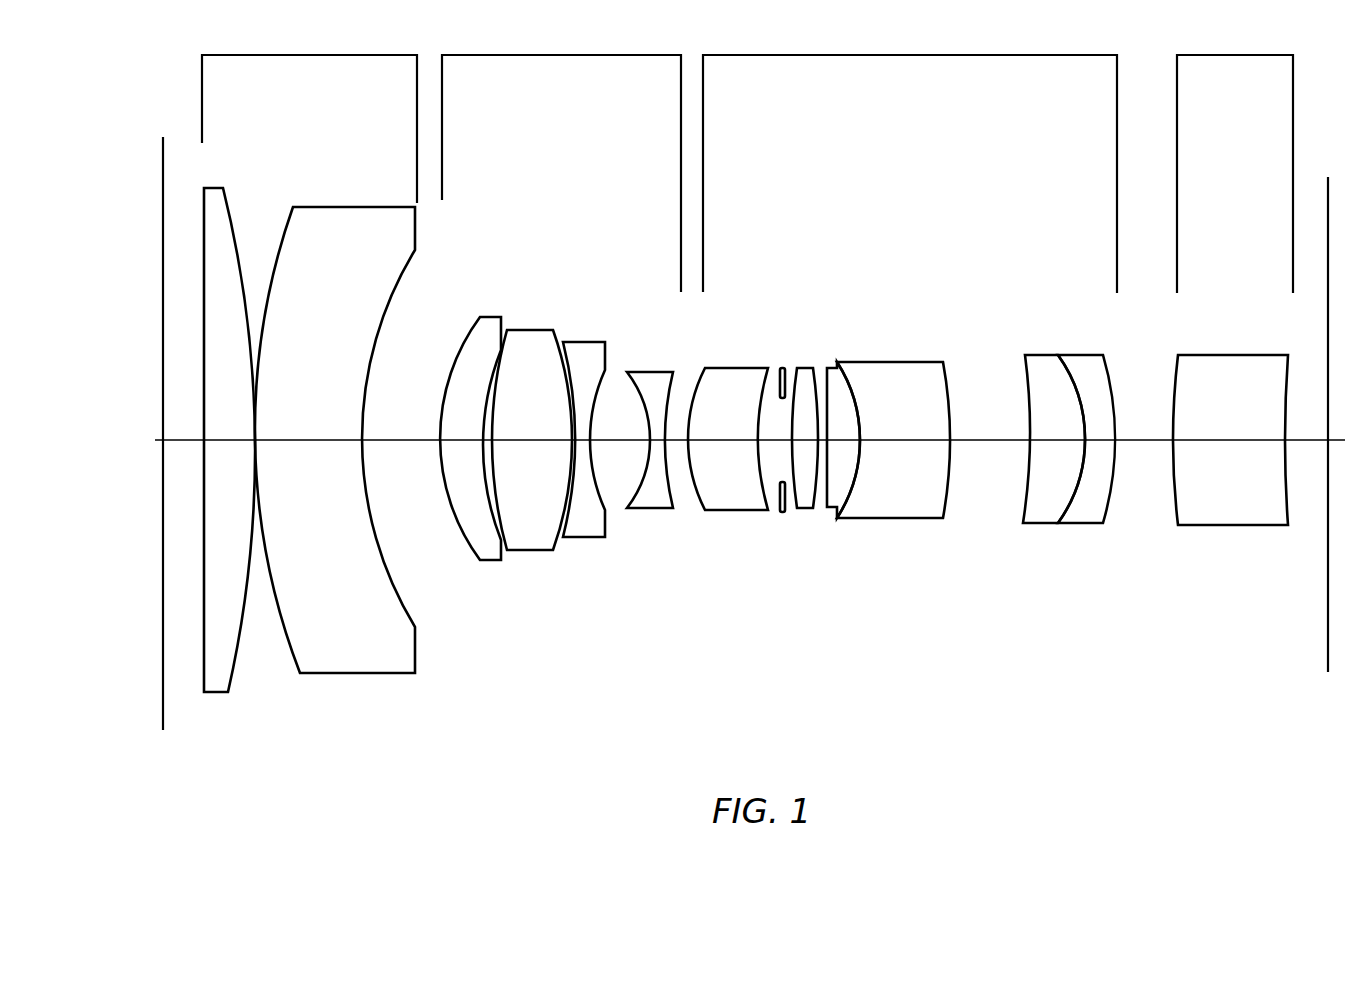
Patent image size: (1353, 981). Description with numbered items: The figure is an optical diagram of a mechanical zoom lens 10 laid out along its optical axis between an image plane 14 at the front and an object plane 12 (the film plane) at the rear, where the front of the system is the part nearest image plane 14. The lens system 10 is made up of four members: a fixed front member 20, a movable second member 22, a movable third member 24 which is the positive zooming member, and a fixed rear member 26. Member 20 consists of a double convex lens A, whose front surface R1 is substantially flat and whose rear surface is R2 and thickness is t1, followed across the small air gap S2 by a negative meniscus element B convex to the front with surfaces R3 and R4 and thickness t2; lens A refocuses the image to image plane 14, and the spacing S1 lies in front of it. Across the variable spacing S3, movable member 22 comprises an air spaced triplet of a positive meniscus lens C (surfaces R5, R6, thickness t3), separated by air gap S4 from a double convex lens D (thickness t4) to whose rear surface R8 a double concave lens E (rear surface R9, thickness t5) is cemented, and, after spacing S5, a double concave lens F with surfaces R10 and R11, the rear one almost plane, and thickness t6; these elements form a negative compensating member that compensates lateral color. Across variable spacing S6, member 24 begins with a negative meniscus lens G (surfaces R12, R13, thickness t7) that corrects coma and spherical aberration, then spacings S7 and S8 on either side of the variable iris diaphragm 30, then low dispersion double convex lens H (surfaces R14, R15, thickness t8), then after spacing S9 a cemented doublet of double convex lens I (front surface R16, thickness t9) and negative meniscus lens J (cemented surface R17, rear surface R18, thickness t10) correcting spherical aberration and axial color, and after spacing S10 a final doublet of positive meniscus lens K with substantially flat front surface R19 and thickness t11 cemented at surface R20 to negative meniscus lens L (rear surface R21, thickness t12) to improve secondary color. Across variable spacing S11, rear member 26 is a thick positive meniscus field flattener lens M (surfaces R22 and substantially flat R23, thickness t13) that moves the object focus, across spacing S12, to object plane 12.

The mechanical zoom lens 10 is at (730, 35).
The object plane 12 is at (1328, 177).
The image plane 14 is at (163, 137).
The front member 20 is at (325, 55).
The second member 22 is at (576, 55).
The third member 24 is at (923, 55).
The rear member 26 is at (1261, 55).
The variable iris diaphragm 30 is at (783, 513).
The double convex lens A is at (227, 693).
The negative meniscus element B is at (375, 674).
The positive meniscus lens element C is at (500, 561).
The double convex lens element D is at (540, 551).
The double concave lens element E is at (595, 538).
The double concave lens element F is at (650, 509).
The negative meniscus element G is at (733, 511).
The double convex lens element H is at (812, 509).
The double convex lens element I is at (835, 490).
The negative meniscus lens element J is at (940, 519).
The positive meniscus lens element K is at (1050, 524).
The negative meniscus lens L is at (1087, 524).
The thick positive meniscus lens M is at (1233, 526).
The radius of front surface of element A R1 is at (203, 216).
The radius of rear surface of element A R2 is at (237, 212).
The radius of front surface of element B R3 is at (284, 232).
The radius of rear surface of element B R4 is at (405, 262).
The radius of front surface of element C R5 is at (448, 368).
The radius of rear surface of element C R6 is at (490, 358).
The radius of cemented surface between D and E R8 is at (565, 345).
The radius of rear surface of element E R9 is at (607, 370).
The radius of front surface of element F R10 is at (630, 378).
The radius of rear surface of element F R11 is at (689, 366).
The radius of front surface of element G R12 is at (705, 370).
The radius of rear surface of element G R13 is at (763, 388).
The radius of front surface of element H R14 is at (795, 370).
The radius of rear surface of element H R15 is at (815, 375).
The radius of front surface of element I R16 is at (828, 372).
The radius of cemented surface between I and J R17 is at (848, 396).
The radius of rear surface of element J R18 is at (955, 378).
The radius of front surface of element K R19 is at (1025, 360).
The radius of cemented surface between K and L R20 is at (1068, 365).
The radius of rear surface of element L R21 is at (1108, 372).
The radius of front surface of element M R22 is at (1178, 360).
The radius of rear surface of element M R23 is at (1290, 360).
The spacing from image plane to element A S1 is at (193, 437).
The air gap between elements A and B S2 is at (258, 312).
The variable spacing between elements B and C S3 is at (418, 437).
The air gap between elements C and D S4 is at (488, 447).
The spacing between elements E and F S5 is at (648, 440).
The variable spacing between elements F and G S6 is at (688, 478).
The spacing between element G and diaphragm S7 is at (770, 497).
The spacing between diaphragm and element H S8 is at (792, 497).
The spacing between elements H and I S9 is at (827, 510).
The spacing between elements J and K S10 is at (1012, 440).
The variable spacing between elements L and M S11 is at (1151, 440).
The spacing from element M to object plane S12 is at (1313, 440).
The thickness of element A t1 is at (218, 411).
The thickness of element B t2 is at (298, 413).
The thickness of element C t3 is at (456, 413).
The thickness of element D t4 is at (517, 417).
The thickness of element E t5 is at (578, 500).
The thickness of element F t6 is at (655, 466).
The thickness of element G t7 is at (710, 467).
The thickness of element H t8 is at (803, 455).
The thickness of element I t9 is at (839, 411).
The thickness of element J t10 is at (893, 413).
The thickness of element K t11 is at (1053, 409).
The thickness of element L t12 is at (1088, 493).
The thickness of element M t13 is at (1204, 489).